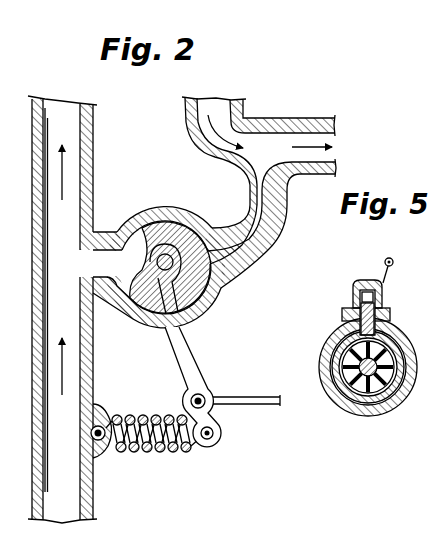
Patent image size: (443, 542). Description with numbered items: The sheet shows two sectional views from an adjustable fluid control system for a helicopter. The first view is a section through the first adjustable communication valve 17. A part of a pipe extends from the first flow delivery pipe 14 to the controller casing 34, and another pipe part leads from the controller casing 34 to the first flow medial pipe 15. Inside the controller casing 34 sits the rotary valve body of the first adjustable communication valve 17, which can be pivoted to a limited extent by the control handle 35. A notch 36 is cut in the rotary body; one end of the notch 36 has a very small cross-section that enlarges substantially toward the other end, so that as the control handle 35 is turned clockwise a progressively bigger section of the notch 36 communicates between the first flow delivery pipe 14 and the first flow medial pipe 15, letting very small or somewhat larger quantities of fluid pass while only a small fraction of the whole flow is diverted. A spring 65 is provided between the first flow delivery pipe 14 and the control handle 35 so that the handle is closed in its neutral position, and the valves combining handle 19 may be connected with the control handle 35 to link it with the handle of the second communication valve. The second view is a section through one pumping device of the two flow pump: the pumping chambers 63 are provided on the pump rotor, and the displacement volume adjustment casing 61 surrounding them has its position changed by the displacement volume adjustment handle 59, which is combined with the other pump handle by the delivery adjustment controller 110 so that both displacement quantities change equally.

In FIG. 2, the first flow delivery pipe 14 is at (60, 474).
In FIG. 2, the first flow medial pipe 15 is at (277, 138).
In FIG. 2, the first adjustable communication valve 17 is at (214, 281).
In FIG. 2, the notch 36 is at (136, 242).
In FIG. 2, the controller casing 34 is at (199, 306).
In FIG. 2, the control handle 35 is at (216, 438).
In FIG. 2, the valves combining handle 19 is at (248, 400).
In FIG. 2, the spring 65 is at (162, 452).
In FIG. 5, the displacement volume adjustment handle 59 is at (362, 286).
In FIG. 5, the delivery adjustment controller 110 is at (394, 263).
In FIG. 5, the pumping chambers 63 is at (342, 386).
In FIG. 5, the displacement volume adjustment casing 61 is at (372, 398).